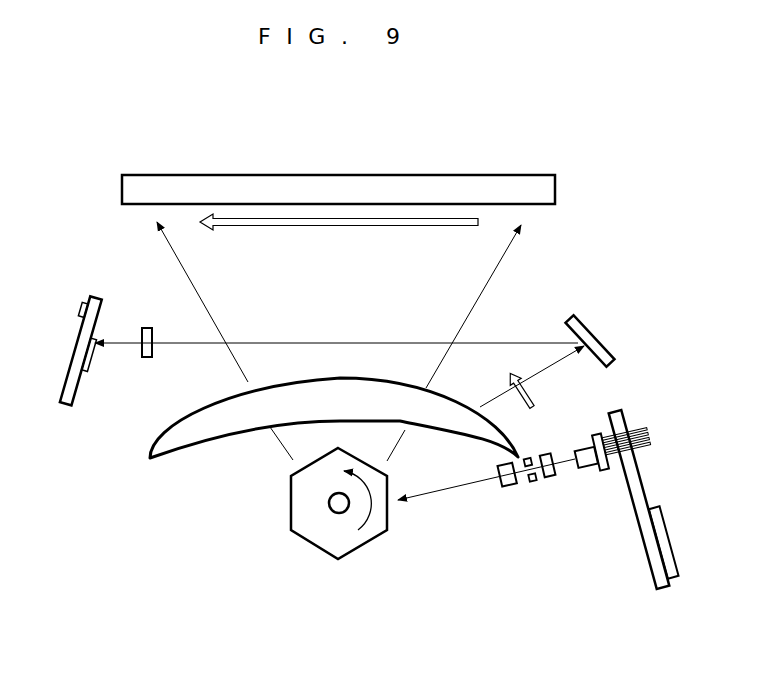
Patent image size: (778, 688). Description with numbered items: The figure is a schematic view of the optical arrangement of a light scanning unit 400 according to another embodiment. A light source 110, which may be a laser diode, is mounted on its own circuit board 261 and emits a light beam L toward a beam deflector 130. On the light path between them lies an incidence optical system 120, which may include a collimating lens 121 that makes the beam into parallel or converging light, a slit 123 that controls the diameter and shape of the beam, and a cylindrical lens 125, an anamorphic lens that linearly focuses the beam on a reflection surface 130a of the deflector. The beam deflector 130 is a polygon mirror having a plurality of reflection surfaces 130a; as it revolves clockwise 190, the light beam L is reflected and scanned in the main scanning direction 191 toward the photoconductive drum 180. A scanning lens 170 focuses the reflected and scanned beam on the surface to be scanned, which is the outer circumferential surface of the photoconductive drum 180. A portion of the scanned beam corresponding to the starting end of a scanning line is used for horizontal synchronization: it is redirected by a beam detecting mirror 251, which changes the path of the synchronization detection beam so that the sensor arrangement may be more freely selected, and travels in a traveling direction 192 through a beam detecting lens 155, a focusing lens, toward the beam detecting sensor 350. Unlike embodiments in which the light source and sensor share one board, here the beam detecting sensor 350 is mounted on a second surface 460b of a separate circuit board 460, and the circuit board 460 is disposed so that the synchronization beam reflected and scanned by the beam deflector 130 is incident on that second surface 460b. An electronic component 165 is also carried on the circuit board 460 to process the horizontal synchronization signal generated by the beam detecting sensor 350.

The light scanning unit 400 is at (129, 126).
The photoconductive drum 180 is at (122, 190).
The main scanning direction 191 is at (334, 228).
The scanning lens 170 is at (150, 451).
The beam deflector 130 is at (302, 545).
The reflection surface 130a is at (388, 518).
The clockwise revolution 190 is at (365, 522).
The beam detecting lens 155 is at (147, 326).
The electronic component 165 is at (77, 312).
The beam detecting sensor 350 is at (92, 355).
The circuit board 460 is at (62, 407).
The second surface 460b is at (79, 405).
The beam detecting mirror 251 is at (596, 335).
The traveling direction 192 is at (528, 400).
The incidence optical system 120 is at (544, 514).
The collimating lens 121 is at (573, 490).
The slit 123 is at (533, 483).
The cylindrical lens 125 is at (502, 486).
The light beam L is at (459, 490).
The light source 110 is at (606, 470).
The circuit board 261 is at (666, 594).